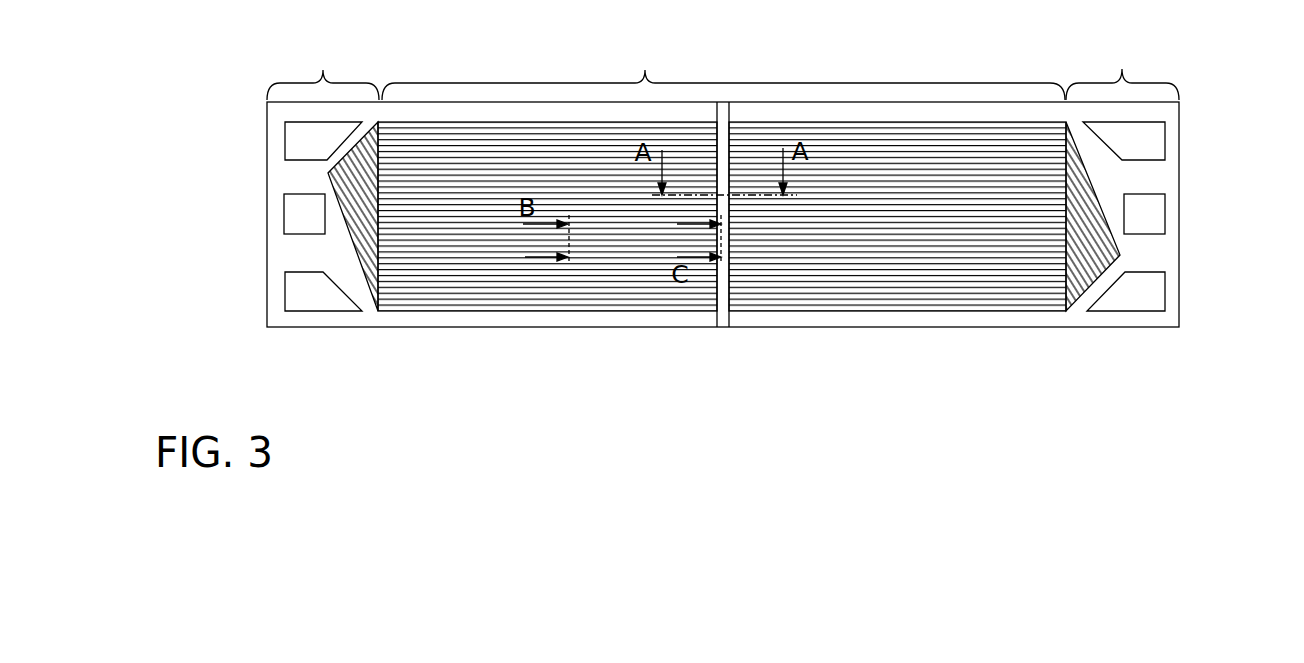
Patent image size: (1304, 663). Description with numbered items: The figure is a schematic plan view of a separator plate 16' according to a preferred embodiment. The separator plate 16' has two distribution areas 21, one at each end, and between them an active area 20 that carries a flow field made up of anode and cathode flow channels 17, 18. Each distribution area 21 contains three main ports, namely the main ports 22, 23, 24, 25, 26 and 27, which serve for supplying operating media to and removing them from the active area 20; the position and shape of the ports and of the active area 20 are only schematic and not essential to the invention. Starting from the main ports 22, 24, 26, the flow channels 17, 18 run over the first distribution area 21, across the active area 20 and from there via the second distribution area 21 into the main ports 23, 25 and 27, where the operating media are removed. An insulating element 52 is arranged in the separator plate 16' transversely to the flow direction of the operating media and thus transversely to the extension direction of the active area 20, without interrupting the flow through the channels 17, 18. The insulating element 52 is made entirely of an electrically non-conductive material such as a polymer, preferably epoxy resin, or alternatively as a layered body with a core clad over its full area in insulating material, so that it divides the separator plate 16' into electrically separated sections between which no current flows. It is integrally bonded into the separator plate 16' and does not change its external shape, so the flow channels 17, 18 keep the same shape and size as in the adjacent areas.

The separator plate 16' is at (774, 172).
The active area 20 is at (723, 67).
The distribution area 21 is at (723, 67).
The insulating element 52 is at (728, 82).
The anode flow channel 17 is at (722, 254).
The cathode flow channel 18 is at (475, 213).
The main port 22 is at (1142, 141).
The main port 23 is at (303, 292).
The main port 24 is at (1142, 292).
The main port 25 is at (303, 141).
The main port 26 is at (1142, 215).
The main port 27 is at (303, 215).